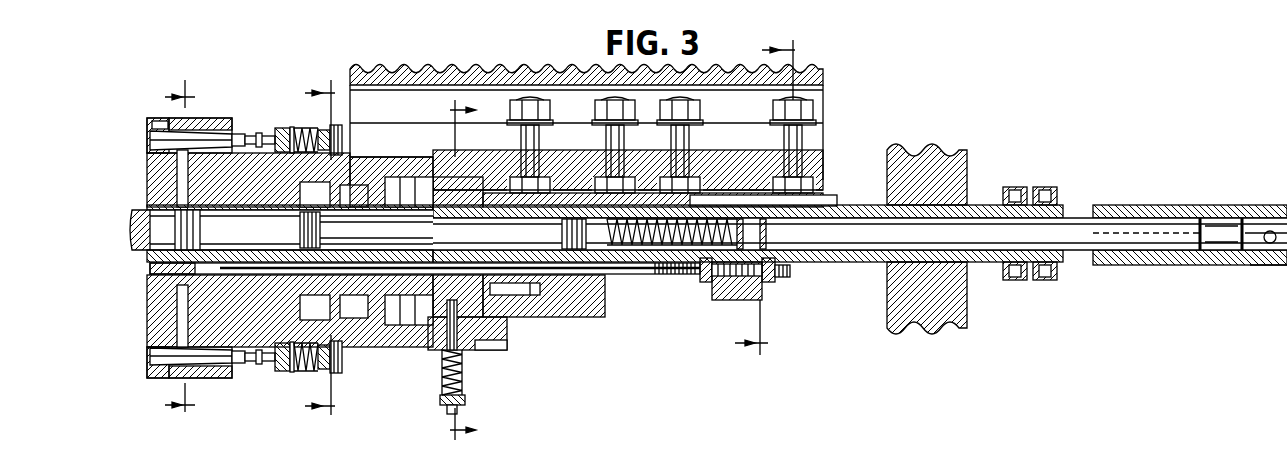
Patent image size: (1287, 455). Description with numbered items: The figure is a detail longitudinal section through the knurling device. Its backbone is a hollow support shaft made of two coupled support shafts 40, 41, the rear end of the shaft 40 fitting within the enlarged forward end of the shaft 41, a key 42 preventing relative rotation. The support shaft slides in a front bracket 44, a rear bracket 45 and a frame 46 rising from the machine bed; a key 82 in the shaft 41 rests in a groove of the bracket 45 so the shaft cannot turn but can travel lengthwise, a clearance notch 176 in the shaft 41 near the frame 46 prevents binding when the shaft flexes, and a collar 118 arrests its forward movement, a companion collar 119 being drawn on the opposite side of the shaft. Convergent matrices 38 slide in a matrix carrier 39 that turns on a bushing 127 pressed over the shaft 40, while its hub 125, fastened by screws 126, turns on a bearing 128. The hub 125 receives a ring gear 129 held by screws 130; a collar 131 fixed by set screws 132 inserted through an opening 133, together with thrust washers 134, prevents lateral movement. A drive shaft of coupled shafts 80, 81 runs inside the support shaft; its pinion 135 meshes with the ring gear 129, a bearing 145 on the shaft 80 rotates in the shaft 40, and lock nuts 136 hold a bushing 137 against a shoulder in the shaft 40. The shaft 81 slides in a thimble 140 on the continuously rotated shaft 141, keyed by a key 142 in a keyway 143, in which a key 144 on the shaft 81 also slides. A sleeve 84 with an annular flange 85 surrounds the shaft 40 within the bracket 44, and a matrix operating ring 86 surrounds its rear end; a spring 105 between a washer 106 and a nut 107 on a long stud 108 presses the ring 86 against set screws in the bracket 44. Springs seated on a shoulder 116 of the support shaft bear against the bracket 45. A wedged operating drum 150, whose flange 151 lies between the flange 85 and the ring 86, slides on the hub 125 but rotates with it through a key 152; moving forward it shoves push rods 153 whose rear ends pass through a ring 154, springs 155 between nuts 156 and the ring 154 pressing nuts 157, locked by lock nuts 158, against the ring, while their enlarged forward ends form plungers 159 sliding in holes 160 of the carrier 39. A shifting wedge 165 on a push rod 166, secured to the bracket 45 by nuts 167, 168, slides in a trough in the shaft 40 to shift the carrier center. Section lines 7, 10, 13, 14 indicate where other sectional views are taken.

The section line 7- 7 is at (184, 245).
The section line 10- 10 is at (321, 246).
The section line 13- 13 is at (453, 270).
The section line 14- 14 is at (765, 196).
The convergent matrices 38 is at (178, 172).
The matrix carrier 39 is at (147, 162).
The support shaft 40 is at (177, 300).
The support shaft 41 is at (875, 262).
The key 42 is at (522, 295).
The bracket 44 is at (500, 340).
The bracket 45 is at (722, 300).
The frame 46 is at (928, 150).
The drive shaft 80 is at (442, 317).
The drive shaft 81 is at (860, 250).
The key 82 is at (770, 201).
The sleeve 84 is at (450, 177).
The annular flange 85 is at (402, 325).
The matrix operating ring 86 is at (475, 200).
The restraining and restoring spring 105 is at (463, 386).
The washer 106 is at (460, 350).
The nut 107 is at (440, 400).
The long stud 108 is at (447, 410).
The shoulder 116 is at (605, 302).
The collar 118 is at (1012, 190).
The lower lock nut 119 is at (1045, 281).
The hub 125 is at (230, 365).
The screws 126 is at (147, 312).
The bushing 127 is at (150, 206).
The bearing 128 is at (258, 205).
The ring gear 129 is at (282, 371).
The screws 130 is at (306, 371).
The collar 131 is at (355, 320).
The set screws 132 is at (376, 227).
The opening 133 is at (350, 168).
The thrust washers 134 is at (302, 312).
The pinion 135 is at (295, 230).
The lock nuts 136 is at (574, 219).
The bushing 137 is at (610, 219).
The thimble 140 is at (1235, 265).
The continuously rotated shaft 141 is at (1275, 265).
The key 142 is at (1260, 220).
The keyway 143 is at (1213, 218).
The key 144 is at (1148, 215).
The bearing 145 is at (212, 230).
The wedged operating drum 150 is at (350, 142).
The inwardly extending flange 151 is at (412, 178).
The key 152 is at (260, 361).
The push rods 153 is at (252, 136).
The ring 154 is at (292, 127).
The springs 155 is at (302, 128).
The nuts 156 is at (279, 128).
The nuts 157 is at (323, 130).
The lock nuts 158 is at (338, 125).
The plungers 159 is at (215, 131).
The holes 160 is at (153, 121).
The shifting wedge 165 is at (150, 268).
The push rod 166 is at (665, 276).
The nut 167 is at (705, 282).
The nut 168 is at (768, 282).
The clearance notch 176 is at (872, 207).